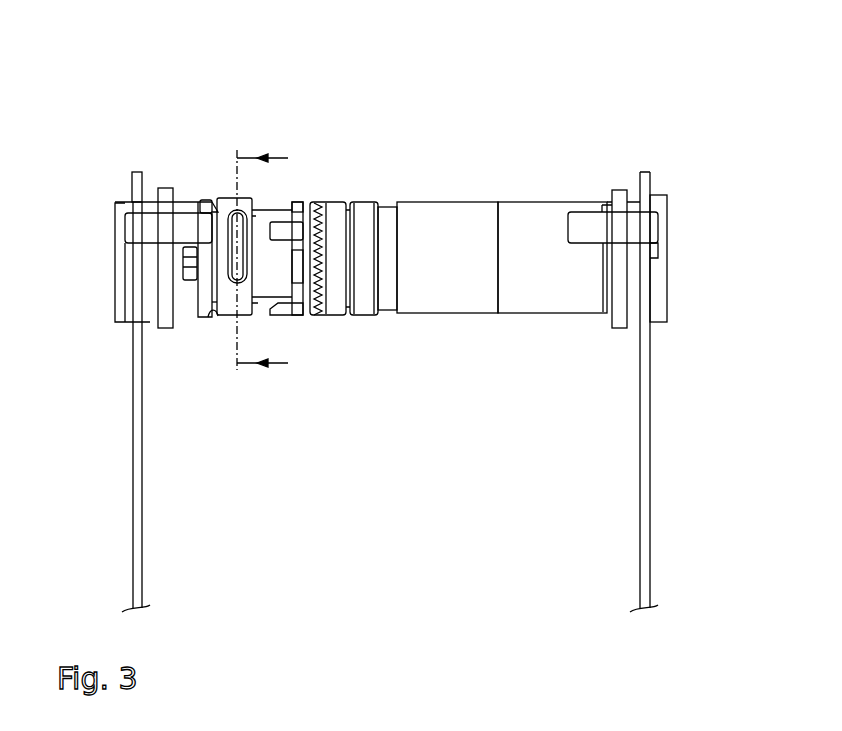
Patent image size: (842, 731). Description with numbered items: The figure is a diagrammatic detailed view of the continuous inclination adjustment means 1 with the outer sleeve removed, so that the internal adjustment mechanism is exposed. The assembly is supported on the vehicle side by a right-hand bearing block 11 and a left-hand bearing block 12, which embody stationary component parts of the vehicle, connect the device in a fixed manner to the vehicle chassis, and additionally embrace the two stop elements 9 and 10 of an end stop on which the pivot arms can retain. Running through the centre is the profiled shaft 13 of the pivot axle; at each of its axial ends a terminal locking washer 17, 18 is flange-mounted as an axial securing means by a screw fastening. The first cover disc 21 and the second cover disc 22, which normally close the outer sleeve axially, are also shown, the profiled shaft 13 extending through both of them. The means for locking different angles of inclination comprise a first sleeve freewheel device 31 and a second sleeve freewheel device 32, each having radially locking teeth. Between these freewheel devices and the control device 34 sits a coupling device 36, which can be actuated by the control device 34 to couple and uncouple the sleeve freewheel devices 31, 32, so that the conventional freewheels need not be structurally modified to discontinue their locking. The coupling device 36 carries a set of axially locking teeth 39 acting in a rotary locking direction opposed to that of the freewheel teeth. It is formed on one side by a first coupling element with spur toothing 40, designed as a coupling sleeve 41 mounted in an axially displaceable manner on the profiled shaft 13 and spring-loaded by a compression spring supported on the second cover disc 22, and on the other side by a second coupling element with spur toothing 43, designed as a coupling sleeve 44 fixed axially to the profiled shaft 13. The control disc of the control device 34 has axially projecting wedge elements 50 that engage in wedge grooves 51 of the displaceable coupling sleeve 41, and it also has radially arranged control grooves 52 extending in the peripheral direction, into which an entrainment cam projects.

The continuous inclination adjustment means 1 is at (522, 488).
The stop element 9 is at (190, 225).
The stop element 10 is at (583, 222).
The right-hand bearing block 11 is at (137, 445).
The left-hand bearing block 12 is at (645, 450).
The profiled shaft 13 is at (183, 282).
The terminal locking washer 17 is at (656, 196).
The terminal locking washer 18 is at (117, 200).
The first cover disc 21 is at (617, 189).
The second cover disc 22 is at (153, 186).
The first sleeve freewheel device 31 is at (458, 268).
The second sleeve freewheel device 32 is at (556, 268).
The control device 34 is at (223, 360).
The coupling device 36 is at (363, 359).
The set of axially locking teeth 39 is at (317, 202).
The first coupling element with spur toothing 40 is at (297, 329).
The coupling sleeve 41 is at (273, 210).
The second coupling element with spur toothing 43 is at (362, 201).
The coupling sleeve 44 is at (378, 207).
The wedge element 50 is at (210, 199).
The wedge groove 51 is at (211, 317).
The control groove 52 is at (244, 265).